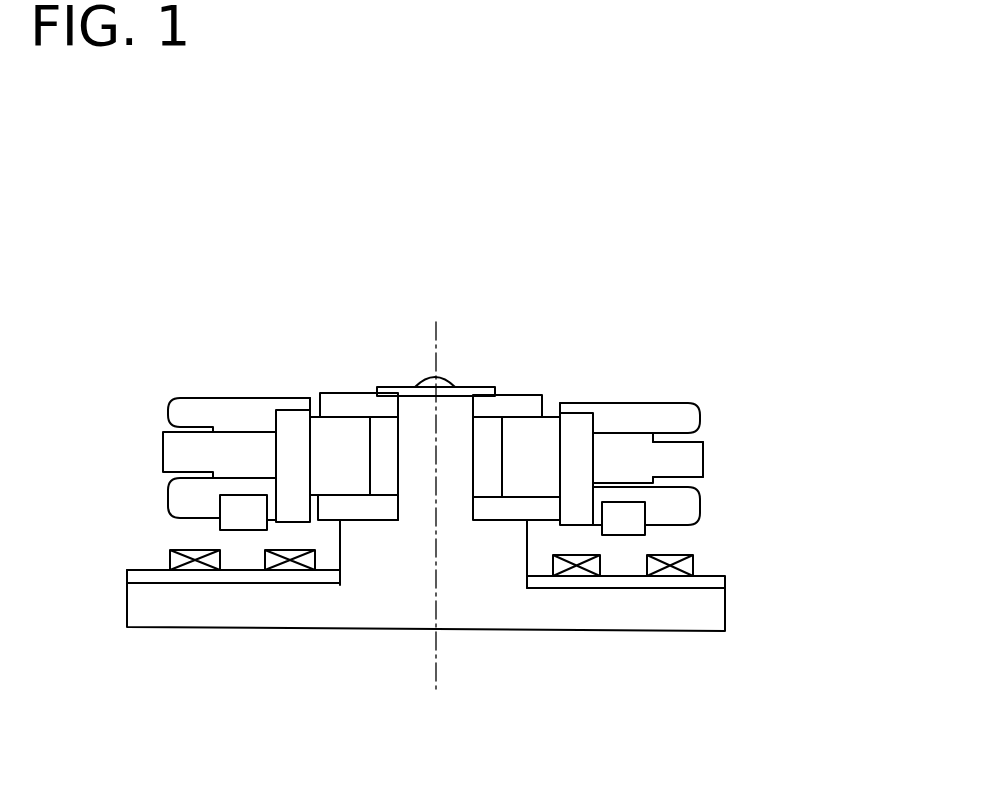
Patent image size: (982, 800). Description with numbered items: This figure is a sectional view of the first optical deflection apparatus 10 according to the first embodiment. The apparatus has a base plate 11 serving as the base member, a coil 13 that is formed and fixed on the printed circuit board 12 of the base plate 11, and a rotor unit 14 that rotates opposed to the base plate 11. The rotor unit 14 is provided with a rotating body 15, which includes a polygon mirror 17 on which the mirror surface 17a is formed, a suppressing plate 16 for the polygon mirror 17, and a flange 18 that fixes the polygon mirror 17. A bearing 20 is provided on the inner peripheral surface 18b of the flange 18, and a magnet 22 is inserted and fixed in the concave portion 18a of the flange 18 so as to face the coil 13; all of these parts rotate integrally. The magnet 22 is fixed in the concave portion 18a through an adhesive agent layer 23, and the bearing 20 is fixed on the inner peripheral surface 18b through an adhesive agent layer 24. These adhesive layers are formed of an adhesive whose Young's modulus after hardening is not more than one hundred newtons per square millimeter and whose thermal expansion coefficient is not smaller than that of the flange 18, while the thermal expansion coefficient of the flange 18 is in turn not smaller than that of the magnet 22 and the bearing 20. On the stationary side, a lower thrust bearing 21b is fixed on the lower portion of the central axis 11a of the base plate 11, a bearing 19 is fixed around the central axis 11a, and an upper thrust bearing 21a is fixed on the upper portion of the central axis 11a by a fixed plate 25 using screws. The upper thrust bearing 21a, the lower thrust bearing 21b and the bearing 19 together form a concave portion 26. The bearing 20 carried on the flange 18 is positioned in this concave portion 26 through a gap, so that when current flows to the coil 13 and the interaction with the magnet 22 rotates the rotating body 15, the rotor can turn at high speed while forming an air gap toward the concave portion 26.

The first optical deflection apparatus 10 is at (432, 302).
The base plate 11 is at (418, 597).
The central axis 11a is at (412, 418).
The printed circuit board 12 is at (595, 580).
The coil 13 is at (668, 567).
The rotor unit 14 is at (182, 370).
The rotating body 15 is at (735, 465).
The suppressing plate 16 is at (702, 418).
The polygon mirror 17 is at (705, 462).
The mirror surface 17a is at (705, 450).
The flange 18 is at (692, 507).
The concave portion 18a is at (228, 527).
The inner peripheral surface 18b is at (313, 476).
The bearing 19 is at (528, 413).
The bearing 20 is at (540, 447).
The upper thrust bearing 21a is at (340, 405).
The lower thrust bearing 21b is at (515, 510).
The magnet 22 is at (630, 526).
The adhesive agent layer 23 is at (628, 498).
The adhesive agent layer 24 is at (308, 428).
The fixed plate 25 is at (470, 392).
The concave portion 26 is at (501, 463).